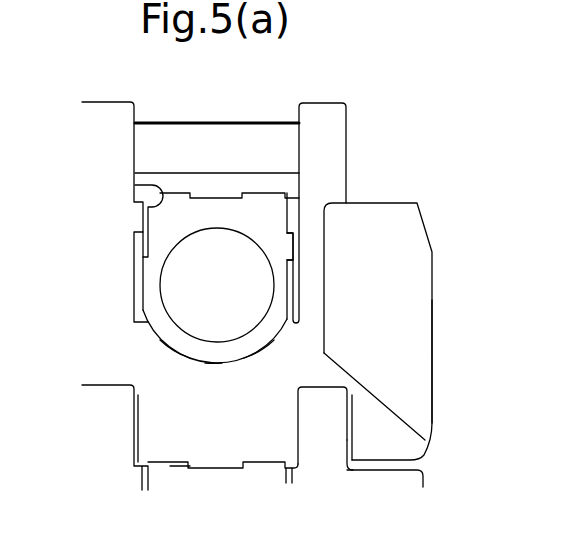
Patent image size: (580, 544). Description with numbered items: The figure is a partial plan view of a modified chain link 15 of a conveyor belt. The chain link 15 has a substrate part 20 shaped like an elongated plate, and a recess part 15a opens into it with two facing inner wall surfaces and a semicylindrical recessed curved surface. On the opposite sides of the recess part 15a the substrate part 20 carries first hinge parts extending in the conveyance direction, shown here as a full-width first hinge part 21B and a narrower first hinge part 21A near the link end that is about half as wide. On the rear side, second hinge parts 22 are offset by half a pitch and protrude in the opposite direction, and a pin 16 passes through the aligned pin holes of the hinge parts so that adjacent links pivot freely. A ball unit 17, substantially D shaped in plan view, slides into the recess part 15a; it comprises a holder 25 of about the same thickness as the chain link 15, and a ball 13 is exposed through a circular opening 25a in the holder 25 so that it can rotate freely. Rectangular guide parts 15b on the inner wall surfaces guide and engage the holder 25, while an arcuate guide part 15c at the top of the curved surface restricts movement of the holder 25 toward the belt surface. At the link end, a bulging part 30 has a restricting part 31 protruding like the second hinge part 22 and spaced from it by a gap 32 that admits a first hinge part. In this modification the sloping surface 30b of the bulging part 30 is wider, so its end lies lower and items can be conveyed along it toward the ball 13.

The ball 13 is at (180, 288).
The chain link 15 is at (282, 338).
The recess part 15a is at (180, 356).
The guide part 15b is at (135, 185).
The guide part 15c is at (238, 358).
The pin 16 is at (217, 133).
The ball unit 17 is at (212, 363).
The substrate part 20 is at (280, 380).
The first hinge part 21A is at (322, 110).
The first hinge part 21B is at (99, 117).
The second hinge part 22 is at (263, 454).
The holder 25 is at (160, 238).
The circular opening 25a is at (266, 306).
The bulging part 30 is at (420, 297).
The sloping surface 30b is at (420, 331).
The restricting part 31 is at (389, 456).
The gap 32 is at (343, 432).